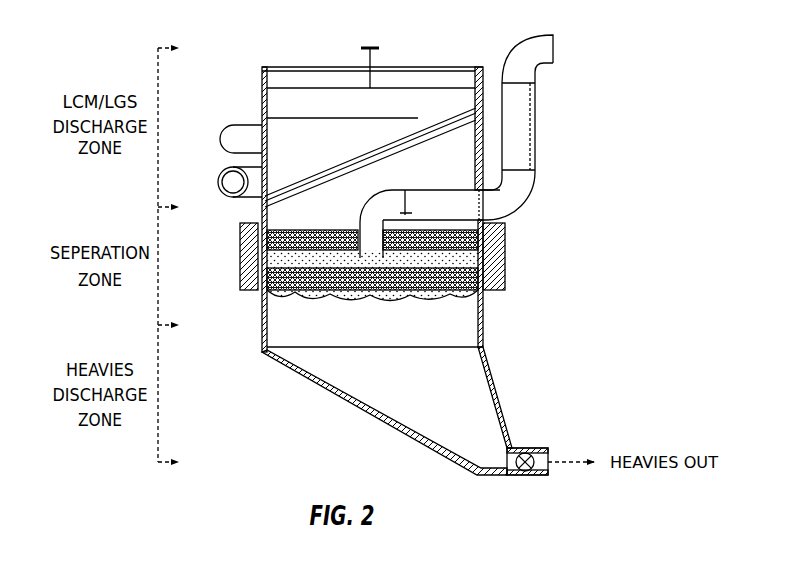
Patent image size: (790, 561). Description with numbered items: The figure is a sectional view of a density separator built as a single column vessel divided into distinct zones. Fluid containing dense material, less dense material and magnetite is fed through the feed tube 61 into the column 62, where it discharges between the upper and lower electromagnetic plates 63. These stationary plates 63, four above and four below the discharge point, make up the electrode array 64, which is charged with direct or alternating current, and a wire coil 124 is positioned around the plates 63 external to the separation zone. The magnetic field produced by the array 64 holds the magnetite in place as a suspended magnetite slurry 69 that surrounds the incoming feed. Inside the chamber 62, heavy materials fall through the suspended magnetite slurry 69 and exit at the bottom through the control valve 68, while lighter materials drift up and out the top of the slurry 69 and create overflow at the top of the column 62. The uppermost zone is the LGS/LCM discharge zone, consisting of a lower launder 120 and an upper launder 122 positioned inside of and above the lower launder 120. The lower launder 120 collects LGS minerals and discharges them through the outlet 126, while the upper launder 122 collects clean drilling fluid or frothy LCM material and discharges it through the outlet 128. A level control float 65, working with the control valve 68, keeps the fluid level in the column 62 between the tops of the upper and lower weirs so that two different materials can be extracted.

The feed tube 61 is at (536, 128).
The column 62 is at (486, 325).
The electromagnetic plates 63 is at (336, 230).
The electrode array 64 is at (566, 275).
The level control float 65 is at (380, 50).
The control valve 68 is at (530, 447).
The suspended magnetite slurry 69 is at (380, 298).
The lower launder 120 is at (425, 150).
The upper launder 122 is at (317, 88).
The wire coil 124 is at (506, 256).
The outlet 126 is at (248, 200).
The outlet 128 is at (249, 124).